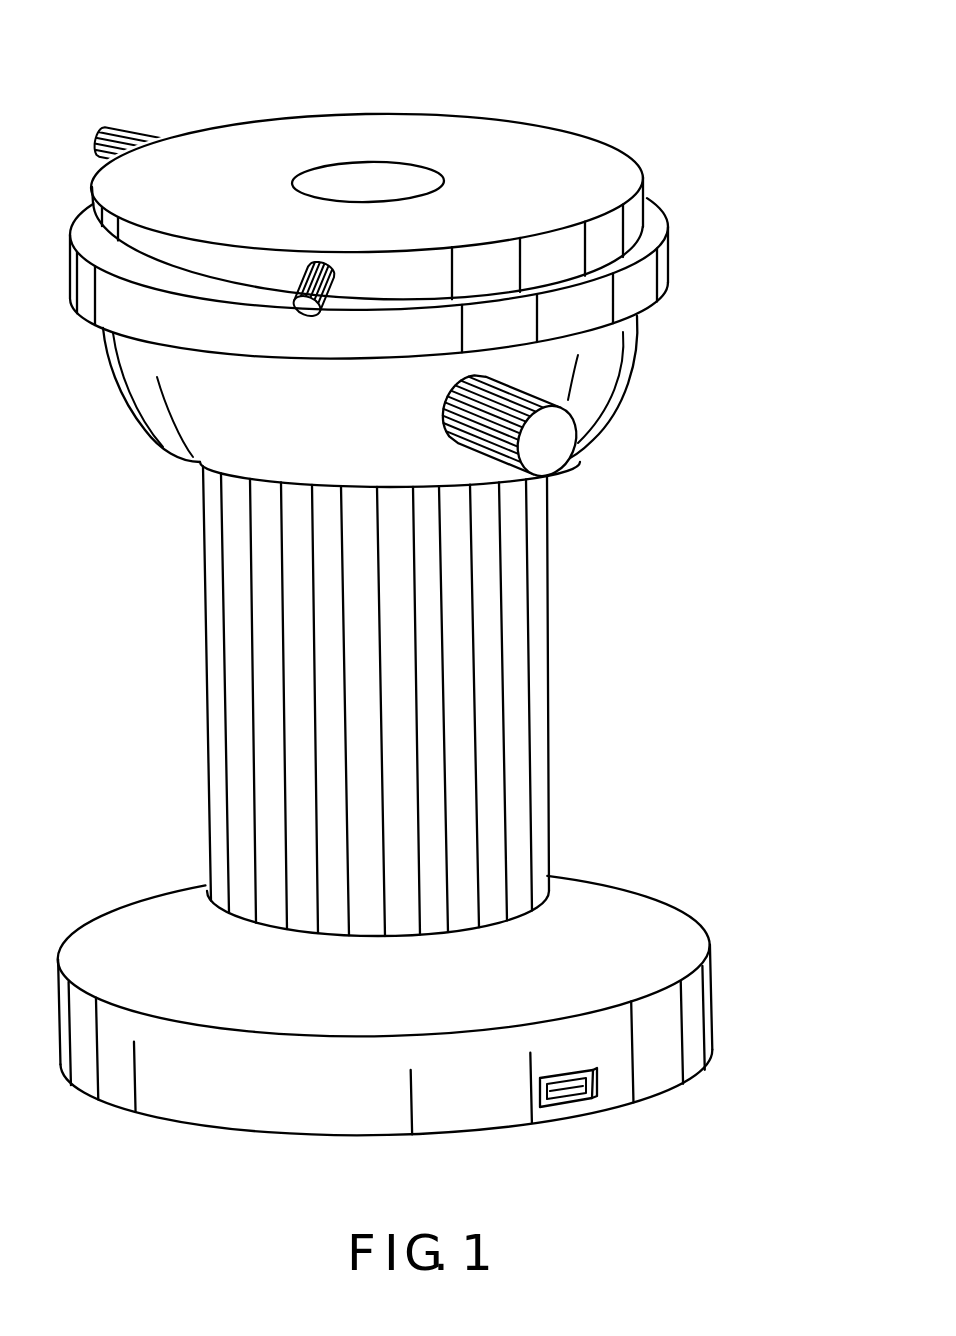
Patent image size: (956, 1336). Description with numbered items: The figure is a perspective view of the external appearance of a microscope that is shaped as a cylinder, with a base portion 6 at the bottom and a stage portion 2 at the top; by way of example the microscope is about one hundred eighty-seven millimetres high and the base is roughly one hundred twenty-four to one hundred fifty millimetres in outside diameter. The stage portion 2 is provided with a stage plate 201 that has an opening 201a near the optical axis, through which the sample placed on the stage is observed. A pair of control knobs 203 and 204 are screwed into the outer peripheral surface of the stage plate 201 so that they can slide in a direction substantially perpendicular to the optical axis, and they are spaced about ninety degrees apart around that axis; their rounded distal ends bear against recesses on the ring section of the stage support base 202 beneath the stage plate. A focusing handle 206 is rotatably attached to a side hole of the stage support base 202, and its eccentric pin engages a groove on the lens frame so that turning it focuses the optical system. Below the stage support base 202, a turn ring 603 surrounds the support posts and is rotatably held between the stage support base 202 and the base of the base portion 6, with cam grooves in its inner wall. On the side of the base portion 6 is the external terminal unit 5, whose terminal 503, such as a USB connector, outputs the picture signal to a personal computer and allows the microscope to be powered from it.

The stage portion 2 is at (490, 98).
The stage plate 201 is at (567, 145).
The opening 201a is at (372, 177).
The stage support base 202 is at (150, 417).
The control knob 203 is at (132, 137).
The control knob 204 is at (307, 273).
The focusing handle 206 is at (547, 458).
The turn ring 603 is at (548, 687).
The base portion 6 is at (101, 901).
The external terminal unit 5 is at (600, 1123).
The terminal 503 is at (561, 1086).